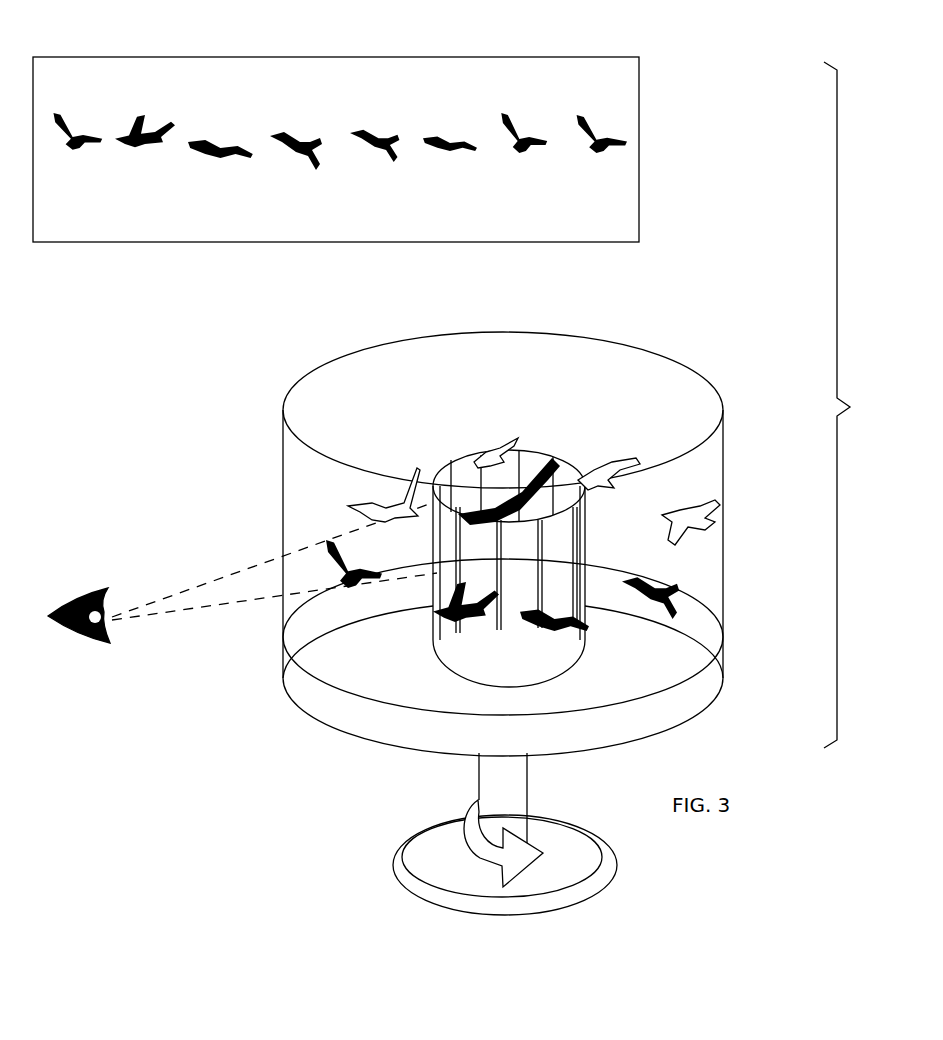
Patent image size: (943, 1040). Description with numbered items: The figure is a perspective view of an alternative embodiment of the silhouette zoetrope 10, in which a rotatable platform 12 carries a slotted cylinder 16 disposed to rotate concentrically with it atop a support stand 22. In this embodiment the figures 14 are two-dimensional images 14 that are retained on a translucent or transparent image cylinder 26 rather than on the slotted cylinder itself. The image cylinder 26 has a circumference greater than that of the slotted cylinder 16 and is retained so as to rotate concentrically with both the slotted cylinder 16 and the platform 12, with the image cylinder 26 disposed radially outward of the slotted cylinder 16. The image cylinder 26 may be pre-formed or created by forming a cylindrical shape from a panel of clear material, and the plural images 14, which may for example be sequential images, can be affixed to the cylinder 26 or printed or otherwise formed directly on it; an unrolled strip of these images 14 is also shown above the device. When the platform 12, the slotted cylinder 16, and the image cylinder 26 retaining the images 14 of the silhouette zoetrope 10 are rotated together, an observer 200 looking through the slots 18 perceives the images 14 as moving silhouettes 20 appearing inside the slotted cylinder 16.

The silhouette zoetrope 10 is at (746, 382).
The rotatable platform 12 is at (283, 694).
The images 14 is at (312, 157).
The slotted cylinder 16 is at (540, 447).
The slots 18 is at (496, 629).
The moving silhouettes 20 is at (497, 513).
The support stand 22 is at (478, 770).
The image cylinder 26 is at (639, 172).
The observer 200 is at (83, 604).